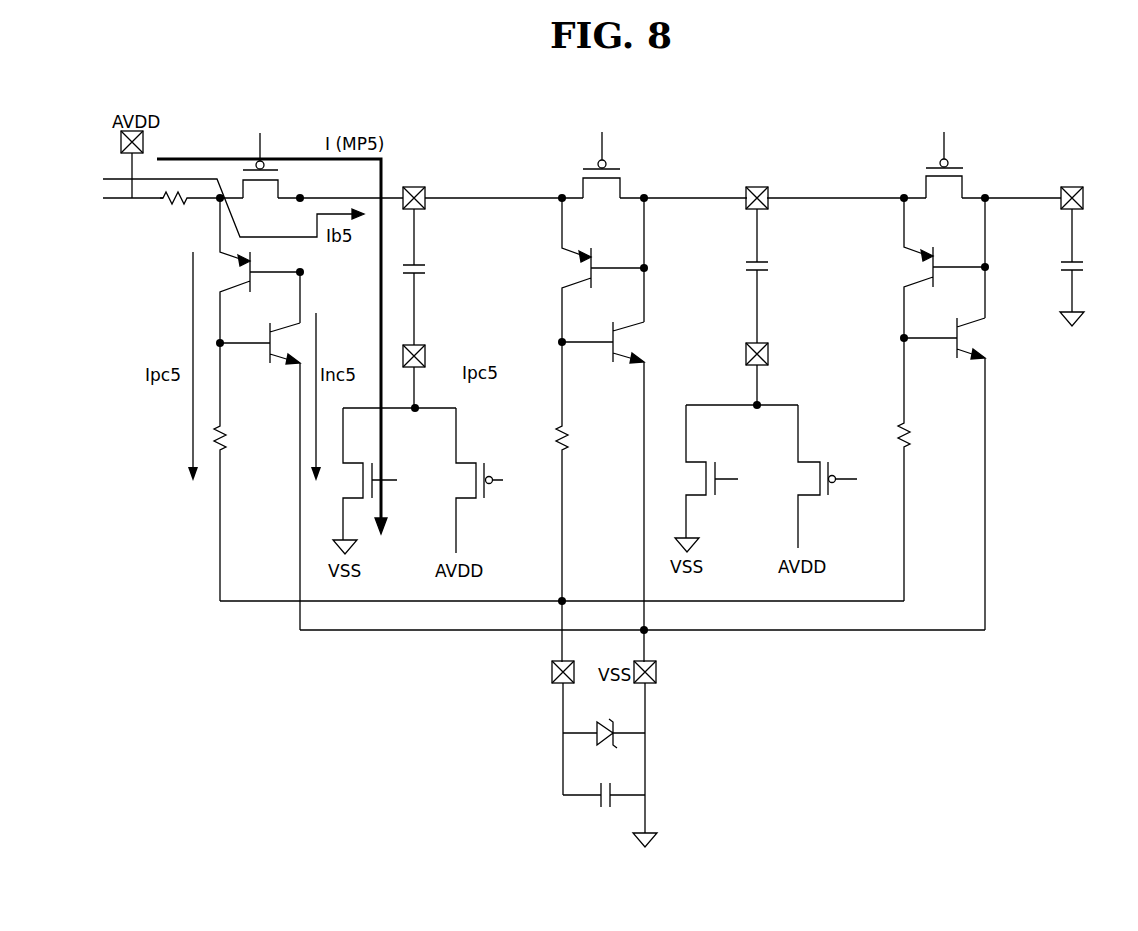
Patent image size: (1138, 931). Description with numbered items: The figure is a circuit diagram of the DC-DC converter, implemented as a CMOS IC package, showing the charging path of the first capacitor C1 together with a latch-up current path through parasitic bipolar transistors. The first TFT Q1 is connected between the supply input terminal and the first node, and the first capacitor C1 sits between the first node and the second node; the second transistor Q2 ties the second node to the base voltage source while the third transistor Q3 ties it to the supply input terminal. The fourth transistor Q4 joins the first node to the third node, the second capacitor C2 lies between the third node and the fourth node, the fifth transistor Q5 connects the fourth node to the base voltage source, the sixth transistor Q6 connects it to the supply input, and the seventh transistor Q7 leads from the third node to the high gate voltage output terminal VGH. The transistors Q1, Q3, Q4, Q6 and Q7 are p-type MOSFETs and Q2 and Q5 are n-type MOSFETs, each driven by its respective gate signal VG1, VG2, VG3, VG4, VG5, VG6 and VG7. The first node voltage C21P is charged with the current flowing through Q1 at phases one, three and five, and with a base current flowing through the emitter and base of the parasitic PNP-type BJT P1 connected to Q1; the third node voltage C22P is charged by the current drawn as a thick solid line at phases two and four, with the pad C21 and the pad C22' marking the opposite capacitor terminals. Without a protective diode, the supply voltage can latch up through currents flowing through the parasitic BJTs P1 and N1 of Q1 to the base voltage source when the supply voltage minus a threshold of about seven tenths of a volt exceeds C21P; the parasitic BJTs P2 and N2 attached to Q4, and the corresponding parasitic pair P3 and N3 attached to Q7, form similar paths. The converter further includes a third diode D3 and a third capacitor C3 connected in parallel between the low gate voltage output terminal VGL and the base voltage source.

The first TFT Q1 is at (260, 175).
The second transistor Q2 is at (363, 481).
The third transistor Q3 is at (477, 480).
The fourth transistor Q4 is at (601, 174).
The fifth transistor Q5 is at (705, 478).
The sixth transistor Q6 is at (827, 476).
The seventh transistor Q7 is at (944, 174).
The parasitic PNP-type BJT P1 is at (251, 270).
The parasitic BJT P2 is at (595, 270).
The third PNP bipolar transistor P3 is at (936, 268).
The parasitic BJT N1 is at (267, 318).
The parasitic BJT N2 is at (609, 280).
The third NPN bipolar transistor N3 is at (951, 278).
The first capacitor C1 is at (428, 272).
The second capacitor C2 is at (928, 270).
The third capacitor C3 is at (604, 785).
The capacitor pad C21 is at (431, 343).
The first node voltage C21P is at (439, 208).
The third node voltage C22P is at (782, 208).
The capacitor pad C22' is at (774, 342).
The third diode D3 is at (604, 723).
The gate signal VG1 is at (264, 122).
The gate signal VG2 is at (418, 483).
The gate signal VG3 is at (524, 483).
The gate signal VG4 is at (603, 122).
The gate signal VG5 is at (760, 482).
The gate signal VG6 is at (876, 482).
The gate signal VG7 is at (946, 121).
The VGH output terminal VGH is at (1072, 187).
The VGL output terminal VGL is at (545, 673).